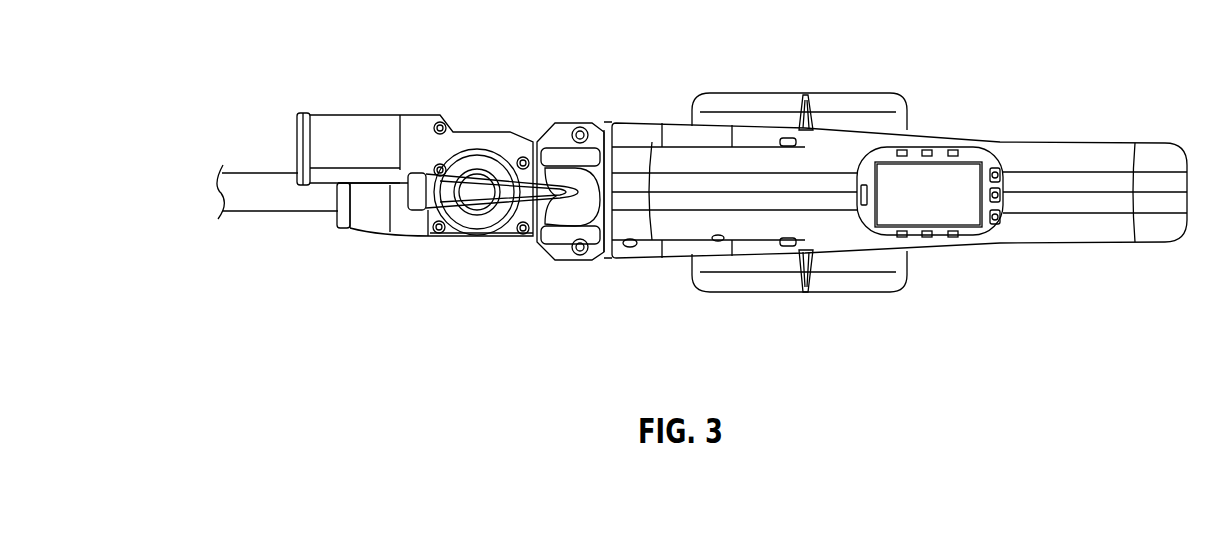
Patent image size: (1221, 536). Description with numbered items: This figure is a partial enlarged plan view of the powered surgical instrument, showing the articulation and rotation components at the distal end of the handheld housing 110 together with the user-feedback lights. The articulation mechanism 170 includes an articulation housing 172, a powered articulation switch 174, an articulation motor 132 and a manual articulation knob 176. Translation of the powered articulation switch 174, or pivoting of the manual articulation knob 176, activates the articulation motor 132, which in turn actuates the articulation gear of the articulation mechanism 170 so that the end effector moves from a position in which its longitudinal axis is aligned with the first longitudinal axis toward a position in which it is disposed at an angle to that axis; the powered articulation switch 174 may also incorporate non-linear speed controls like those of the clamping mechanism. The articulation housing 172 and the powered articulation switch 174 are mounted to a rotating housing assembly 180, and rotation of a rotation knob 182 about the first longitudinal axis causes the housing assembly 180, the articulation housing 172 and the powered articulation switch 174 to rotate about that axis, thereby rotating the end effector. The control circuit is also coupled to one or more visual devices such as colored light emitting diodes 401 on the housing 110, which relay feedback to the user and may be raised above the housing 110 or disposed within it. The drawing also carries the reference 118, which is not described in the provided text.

The housing 110 is at (1047, 252).
The surgical instrument 118 is at (1037, 122).
The articulation motor 132 is at (340, 112).
The articulation mechanism 170 is at (386, 80).
The articulation housing 172 is at (465, 239).
The powered articulation switch 174 is at (805, 100).
The manual articulation knob 176 is at (470, 185).
The rotating housing assembly 180 is at (528, 258).
The rotation knob 182 is at (576, 262).
The light emitting diodes 401 is at (930, 240).